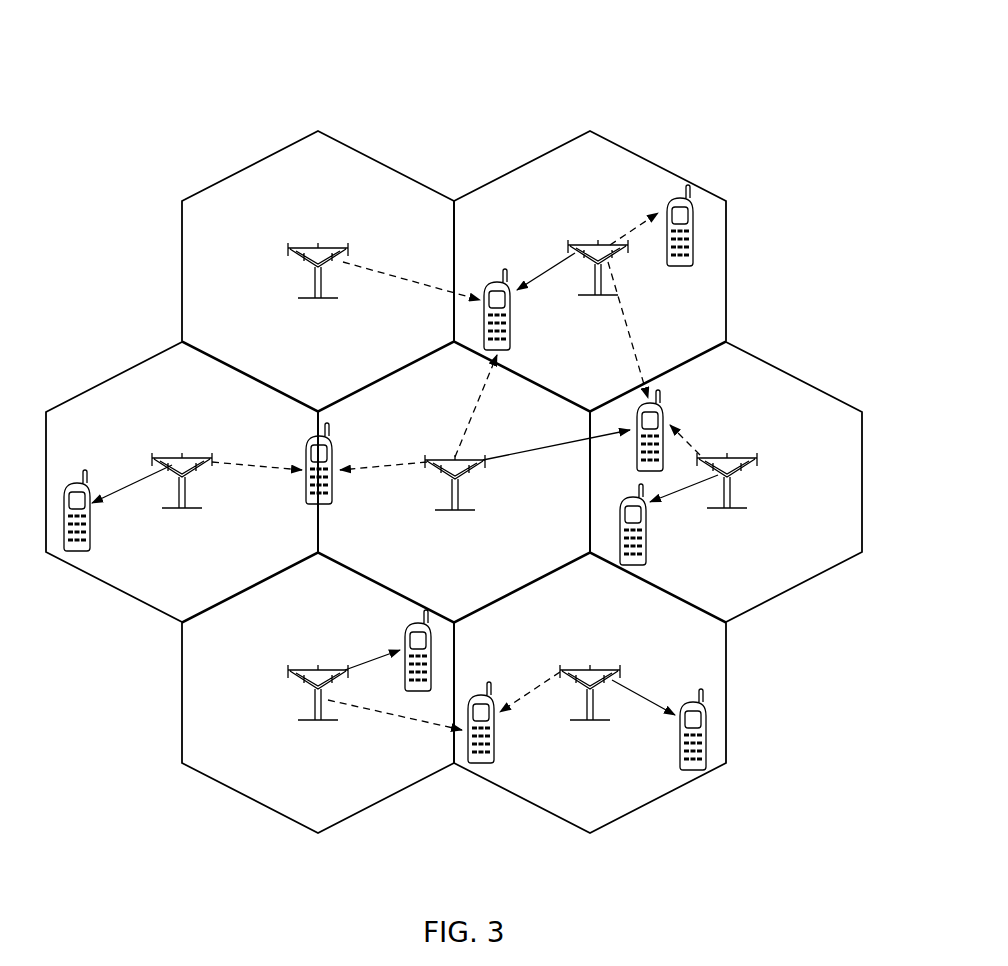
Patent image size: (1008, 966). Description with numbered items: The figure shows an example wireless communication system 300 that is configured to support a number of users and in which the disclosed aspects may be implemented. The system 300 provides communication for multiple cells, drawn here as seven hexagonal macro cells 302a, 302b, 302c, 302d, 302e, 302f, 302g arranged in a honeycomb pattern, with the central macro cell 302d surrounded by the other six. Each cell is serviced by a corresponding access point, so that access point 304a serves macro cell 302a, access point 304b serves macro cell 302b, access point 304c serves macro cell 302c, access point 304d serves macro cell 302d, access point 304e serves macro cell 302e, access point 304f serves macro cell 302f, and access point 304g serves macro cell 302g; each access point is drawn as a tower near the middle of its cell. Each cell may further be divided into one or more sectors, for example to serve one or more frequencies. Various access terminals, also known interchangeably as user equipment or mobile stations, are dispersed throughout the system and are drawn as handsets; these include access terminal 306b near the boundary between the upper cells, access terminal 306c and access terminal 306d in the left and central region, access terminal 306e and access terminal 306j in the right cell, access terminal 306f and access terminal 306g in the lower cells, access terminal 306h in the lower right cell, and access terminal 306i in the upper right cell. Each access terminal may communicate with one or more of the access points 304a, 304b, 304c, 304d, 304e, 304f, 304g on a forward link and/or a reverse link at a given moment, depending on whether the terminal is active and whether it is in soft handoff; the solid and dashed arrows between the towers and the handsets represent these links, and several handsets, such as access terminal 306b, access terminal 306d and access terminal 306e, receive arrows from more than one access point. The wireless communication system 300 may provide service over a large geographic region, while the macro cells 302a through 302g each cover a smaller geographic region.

The wireless communication system 300 is at (737, 61).
The macro cell 302a is at (234, 172).
The macro cell 302b is at (676, 173).
The macro cell 302c is at (116, 374).
The macro cell 302d is at (450, 389).
The macro cell 302e is at (792, 374).
The macro cell 302f is at (215, 781).
The macro cell 302g is at (693, 781).
The access point 304a is at (318, 242).
The access point 304b is at (572, 240).
The access point 304c is at (182, 456).
The access point 304d is at (428, 457).
The access point 304e is at (755, 456).
The access point 304f is at (318, 664).
The access point 304g is at (590, 664).
The access terminal 306b is at (508, 270).
The access terminal 306c is at (90, 541).
The access terminal 306d is at (306, 501).
The access terminal 306e is at (662, 400).
The access terminal 306f is at (406, 630).
The access terminal 306g is at (496, 746).
The access terminal 306h is at (697, 700).
The access terminal 306i is at (668, 210).
The access terminal 306j is at (647, 546).